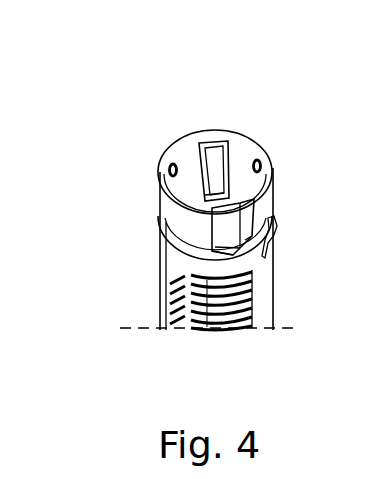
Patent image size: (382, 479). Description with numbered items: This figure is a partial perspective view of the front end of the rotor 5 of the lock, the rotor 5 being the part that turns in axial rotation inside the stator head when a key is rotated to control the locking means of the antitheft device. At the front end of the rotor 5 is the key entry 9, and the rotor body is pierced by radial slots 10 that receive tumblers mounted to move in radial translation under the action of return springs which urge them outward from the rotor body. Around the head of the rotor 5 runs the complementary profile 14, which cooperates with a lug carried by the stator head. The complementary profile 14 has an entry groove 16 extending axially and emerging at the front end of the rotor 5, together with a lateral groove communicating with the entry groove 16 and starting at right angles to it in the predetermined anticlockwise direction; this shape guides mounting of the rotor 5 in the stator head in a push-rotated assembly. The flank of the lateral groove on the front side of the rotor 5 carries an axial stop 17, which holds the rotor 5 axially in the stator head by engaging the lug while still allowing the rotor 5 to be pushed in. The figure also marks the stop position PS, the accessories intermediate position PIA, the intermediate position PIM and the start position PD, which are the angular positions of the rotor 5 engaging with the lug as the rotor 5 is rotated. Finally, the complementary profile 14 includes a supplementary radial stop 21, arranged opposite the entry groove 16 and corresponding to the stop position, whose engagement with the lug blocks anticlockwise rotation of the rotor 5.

The rotor 5 is at (234, 92).
The key entry 9 is at (224, 157).
The radial slots 10 is at (240, 326).
The complementary profile 14 is at (158, 198).
The entry groove 16 is at (239, 205).
The axial stop 17 is at (208, 262).
The supplementary radial stop 21 is at (273, 230).
The accessories intermediate position PIA is at (208, 128).
The intermediate position PIM is at (167, 135).
The start position PD is at (165, 240).
The stop position PS is at (277, 237).